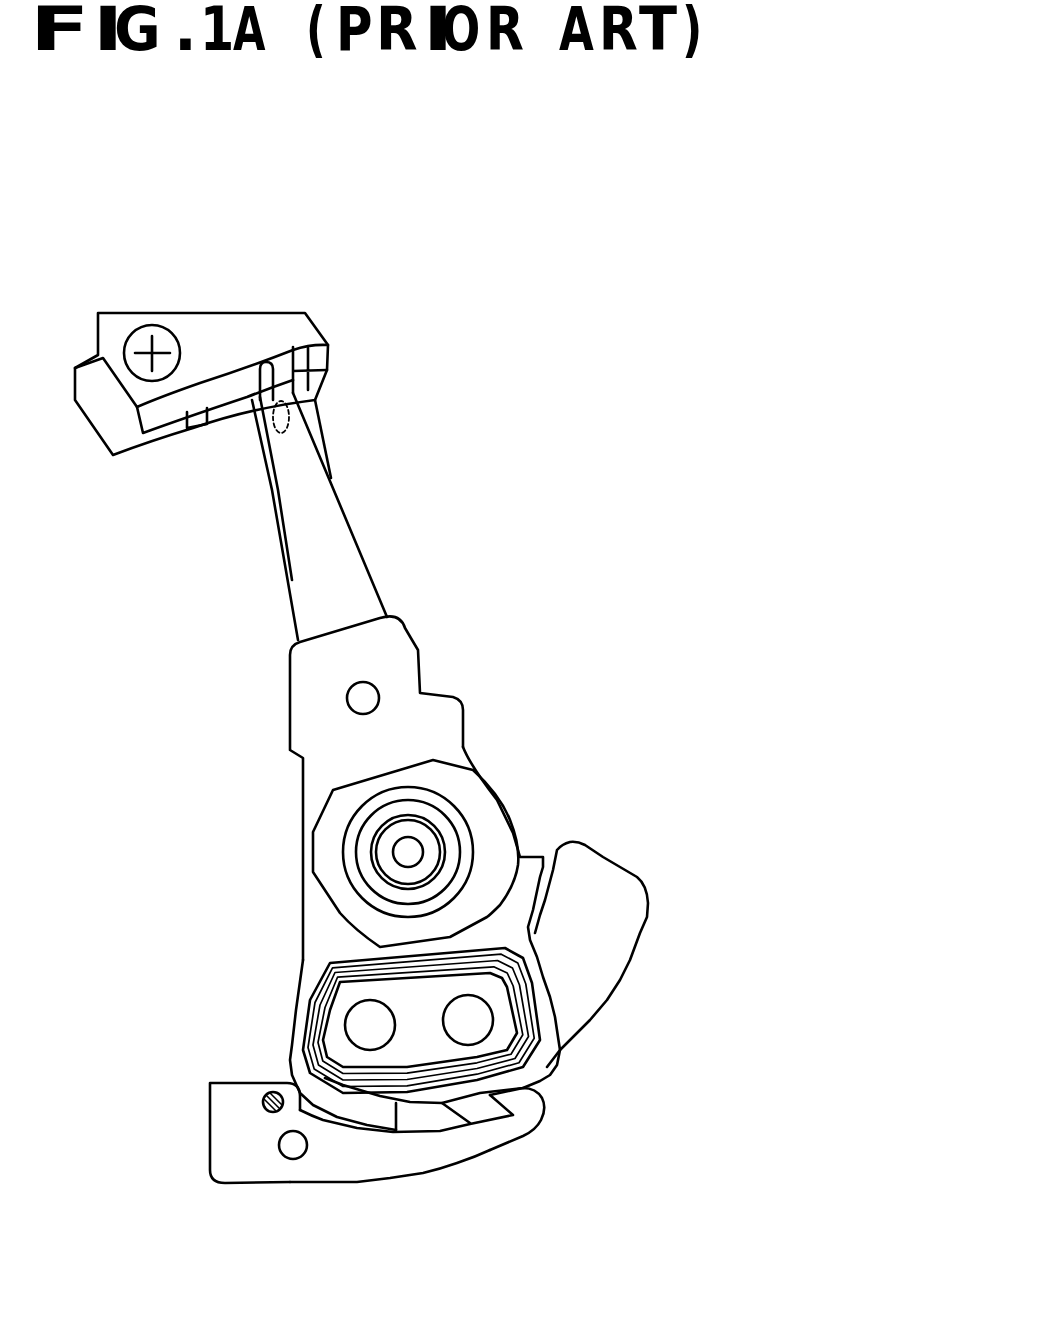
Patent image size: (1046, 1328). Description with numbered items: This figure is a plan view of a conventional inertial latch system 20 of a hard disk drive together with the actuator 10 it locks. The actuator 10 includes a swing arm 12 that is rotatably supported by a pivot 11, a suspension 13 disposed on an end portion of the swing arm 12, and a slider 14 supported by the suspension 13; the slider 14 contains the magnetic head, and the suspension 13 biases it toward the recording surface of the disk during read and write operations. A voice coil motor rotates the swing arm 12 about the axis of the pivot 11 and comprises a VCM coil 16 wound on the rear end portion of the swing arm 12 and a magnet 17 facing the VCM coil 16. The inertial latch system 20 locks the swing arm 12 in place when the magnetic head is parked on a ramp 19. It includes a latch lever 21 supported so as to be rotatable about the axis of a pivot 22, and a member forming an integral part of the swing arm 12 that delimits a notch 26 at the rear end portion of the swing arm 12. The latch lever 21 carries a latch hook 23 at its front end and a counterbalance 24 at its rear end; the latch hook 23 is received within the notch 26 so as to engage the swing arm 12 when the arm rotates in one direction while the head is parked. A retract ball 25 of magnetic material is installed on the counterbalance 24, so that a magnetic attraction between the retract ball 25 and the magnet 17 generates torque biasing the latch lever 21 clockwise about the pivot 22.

The actuator 10 is at (492, 798).
The pivot 11 is at (408, 852).
The swing arm 12 is at (393, 653).
The suspension 13 is at (340, 545).
The slider 14 is at (290, 425).
The VCM coil 16 is at (540, 1036).
The magnet 17 is at (607, 947).
The ramp 19 is at (285, 325).
The inertial latch system 20 is at (383, 1170).
The latch lever 21 is at (405, 1163).
The pivot 22 is at (295, 1152).
The latch hook 23 is at (532, 1105).
The counterbalance 24 is at (223, 1152).
The retract ball 25 is at (270, 1092).
The notch 26 is at (440, 1127).